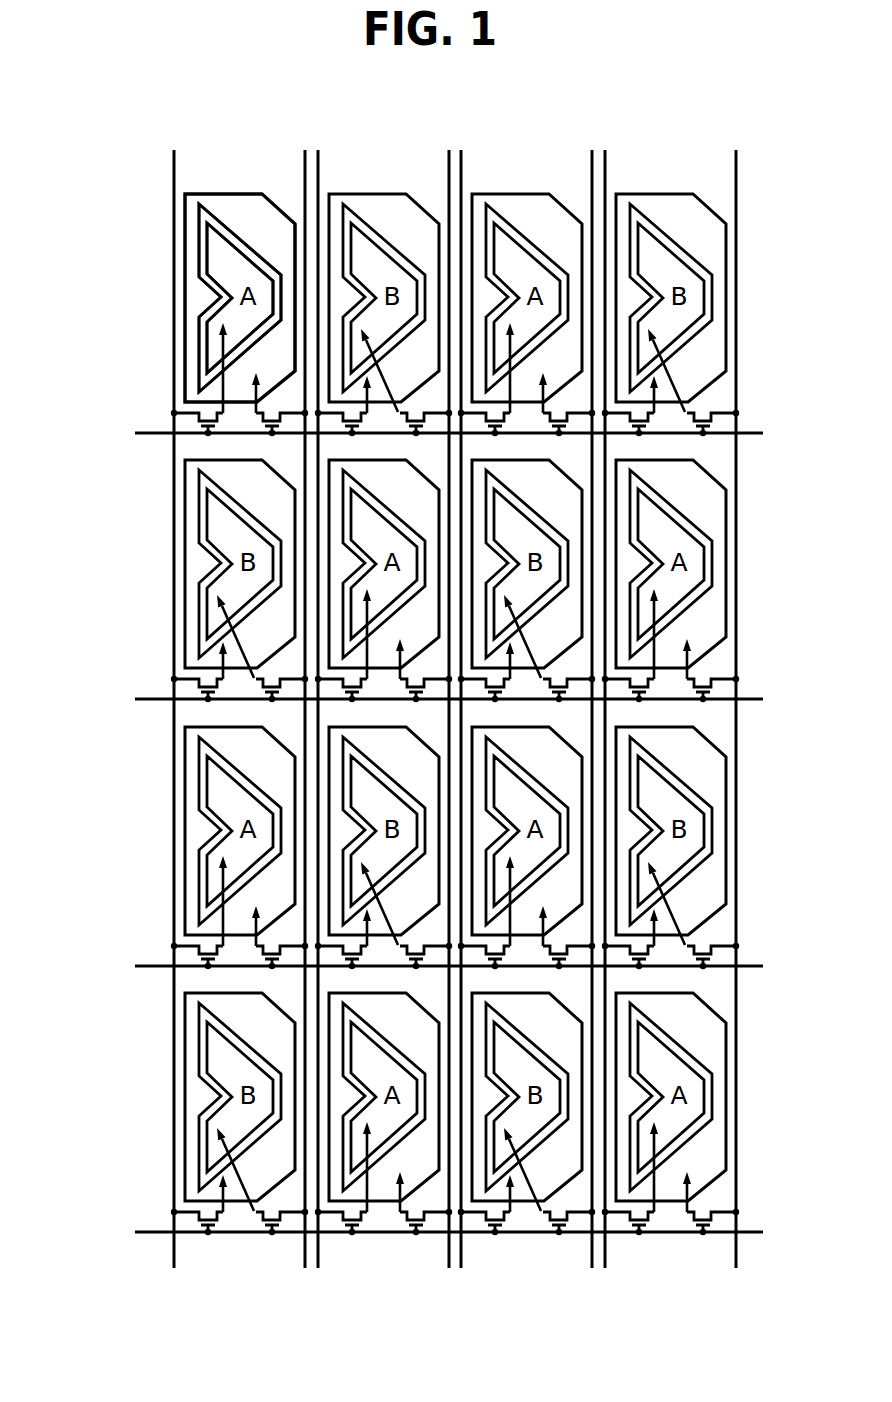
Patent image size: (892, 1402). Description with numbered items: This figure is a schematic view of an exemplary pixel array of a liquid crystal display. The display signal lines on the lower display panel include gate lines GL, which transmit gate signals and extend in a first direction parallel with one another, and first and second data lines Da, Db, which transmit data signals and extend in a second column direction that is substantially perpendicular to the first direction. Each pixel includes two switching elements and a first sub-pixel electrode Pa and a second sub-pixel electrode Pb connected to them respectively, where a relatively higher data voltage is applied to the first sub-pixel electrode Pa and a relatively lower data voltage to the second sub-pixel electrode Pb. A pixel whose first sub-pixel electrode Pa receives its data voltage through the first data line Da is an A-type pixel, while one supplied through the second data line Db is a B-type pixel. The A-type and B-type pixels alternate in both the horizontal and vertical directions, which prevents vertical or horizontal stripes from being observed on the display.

The first data line Da is at (389, 696).
The second data line Db is at (514, 696).
The gate line GL is at (433, 837).
The first sub-pixel electrode Pa is at (207, 243).
The second sub-pixel electrode Pb is at (232, 193).